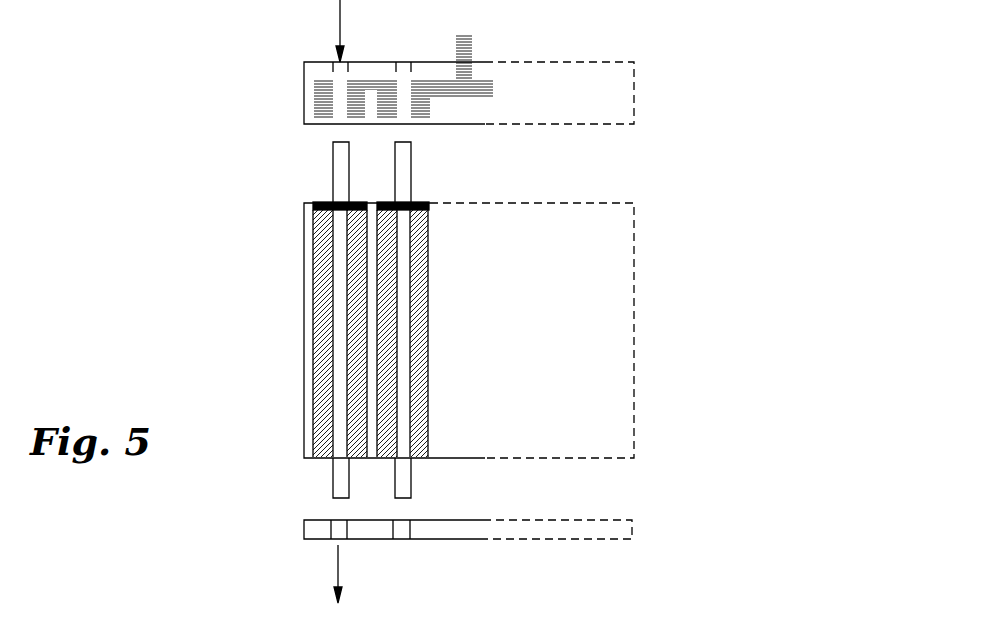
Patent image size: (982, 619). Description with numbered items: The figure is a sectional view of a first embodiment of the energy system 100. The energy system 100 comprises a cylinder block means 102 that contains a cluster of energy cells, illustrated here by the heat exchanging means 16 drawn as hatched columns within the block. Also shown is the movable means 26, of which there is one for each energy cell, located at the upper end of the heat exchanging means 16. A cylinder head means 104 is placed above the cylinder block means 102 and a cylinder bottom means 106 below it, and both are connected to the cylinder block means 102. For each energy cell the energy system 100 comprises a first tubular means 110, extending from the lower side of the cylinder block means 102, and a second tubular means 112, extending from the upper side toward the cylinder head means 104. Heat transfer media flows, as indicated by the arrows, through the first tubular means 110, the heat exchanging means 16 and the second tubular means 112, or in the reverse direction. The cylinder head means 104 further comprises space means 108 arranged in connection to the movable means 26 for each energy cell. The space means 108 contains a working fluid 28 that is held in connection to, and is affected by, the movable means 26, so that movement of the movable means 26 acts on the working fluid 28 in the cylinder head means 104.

The energy system 100 is at (735, 128).
The cylinder block means 102 is at (633, 337).
The cylinder head means 104 is at (634, 92).
The cylinder bottom means 106 is at (632, 523).
The space means 108 is at (322, 100).
The first tubular means 110 is at (332, 482).
The second tubular means 112 is at (333, 174).
The heat exchanging means 16 is at (315, 370).
The movable means 26 is at (323, 207).
The working fluid 28 is at (437, 90).